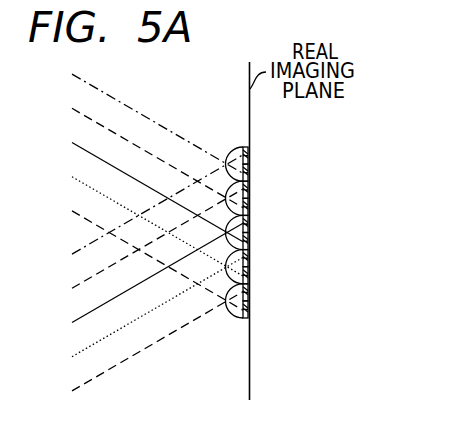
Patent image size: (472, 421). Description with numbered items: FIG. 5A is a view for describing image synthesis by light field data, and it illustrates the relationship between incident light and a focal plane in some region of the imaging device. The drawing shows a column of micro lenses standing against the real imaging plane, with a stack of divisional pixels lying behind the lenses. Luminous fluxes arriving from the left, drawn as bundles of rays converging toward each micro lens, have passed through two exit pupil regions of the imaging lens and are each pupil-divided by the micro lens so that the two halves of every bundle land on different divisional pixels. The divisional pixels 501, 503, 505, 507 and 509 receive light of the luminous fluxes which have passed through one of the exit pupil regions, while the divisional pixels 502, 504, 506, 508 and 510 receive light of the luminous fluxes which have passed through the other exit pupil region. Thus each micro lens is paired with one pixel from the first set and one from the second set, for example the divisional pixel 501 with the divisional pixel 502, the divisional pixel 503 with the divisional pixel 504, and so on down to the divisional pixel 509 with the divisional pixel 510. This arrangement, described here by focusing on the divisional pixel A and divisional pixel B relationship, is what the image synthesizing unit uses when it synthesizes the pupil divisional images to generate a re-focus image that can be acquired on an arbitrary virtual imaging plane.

The divisional pixel 501 is at (249, 147).
The divisional pixel 502 is at (249, 162).
The divisional pixel 503 is at (249, 182).
The divisional pixel 504 is at (249, 198).
The divisional pixel 505 is at (249, 217).
The divisional pixel 506 is at (249, 242).
The divisional pixel 507 is at (249, 262).
The divisional pixel 508 is at (249, 280).
The divisional pixel 509 is at (249, 300).
The divisional pixel 510 is at (249, 315).